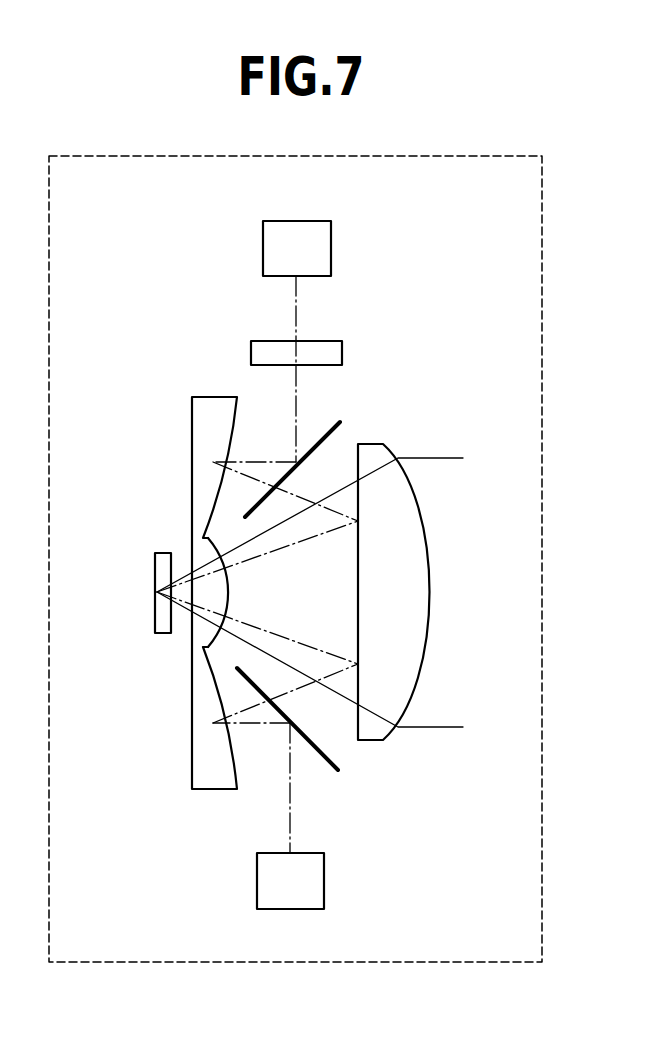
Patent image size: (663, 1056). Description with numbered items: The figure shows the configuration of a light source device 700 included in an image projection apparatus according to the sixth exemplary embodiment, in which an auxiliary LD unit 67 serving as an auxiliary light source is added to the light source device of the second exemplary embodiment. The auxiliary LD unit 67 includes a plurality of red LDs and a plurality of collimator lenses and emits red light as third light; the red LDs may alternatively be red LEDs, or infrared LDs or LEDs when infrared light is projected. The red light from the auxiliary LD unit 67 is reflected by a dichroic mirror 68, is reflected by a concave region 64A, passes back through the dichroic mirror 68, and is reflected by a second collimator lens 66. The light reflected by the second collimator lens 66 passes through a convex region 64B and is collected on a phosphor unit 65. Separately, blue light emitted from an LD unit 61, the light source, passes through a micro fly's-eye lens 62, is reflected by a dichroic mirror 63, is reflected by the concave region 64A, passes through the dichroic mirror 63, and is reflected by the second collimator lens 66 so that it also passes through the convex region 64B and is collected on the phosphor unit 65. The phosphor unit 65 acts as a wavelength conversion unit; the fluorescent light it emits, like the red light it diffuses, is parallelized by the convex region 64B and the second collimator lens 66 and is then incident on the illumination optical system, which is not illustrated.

The LD unit 61 is at (263, 244).
The micro fly's-eye lens 62 is at (320, 341).
The dichroic mirror 63 is at (340, 421).
The concave region 64A is at (207, 483).
The convex region 64B is at (232, 591).
The phosphor unit 65 is at (155, 576).
The second collimator lens 66 is at (372, 741).
The auxiliary LD unit 67 is at (325, 880).
The dichroic mirror 68 is at (338, 772).
The light source device 700 is at (305, 963).